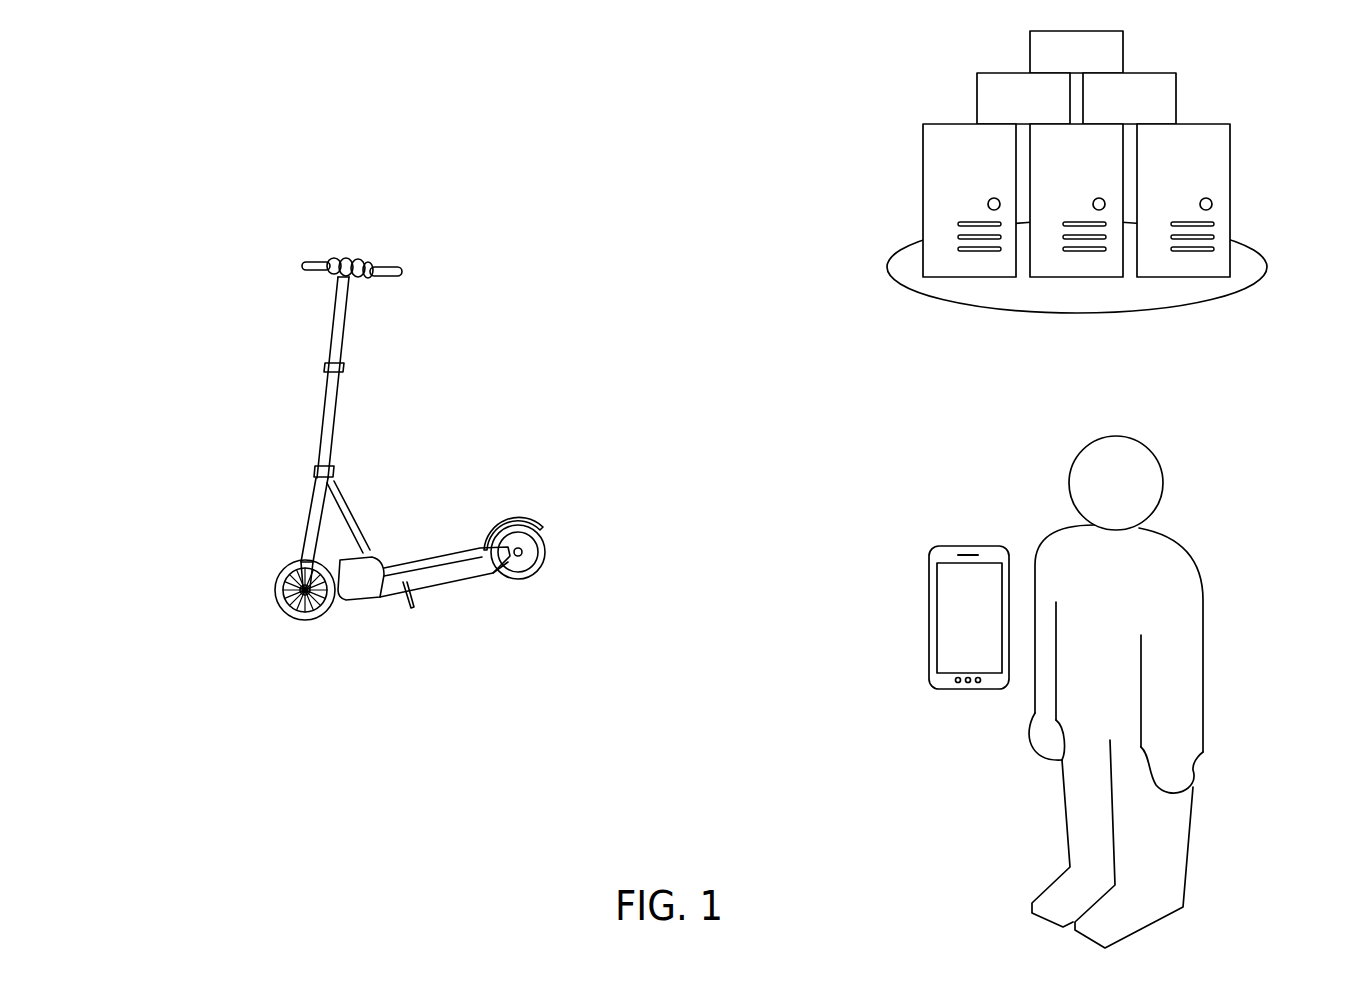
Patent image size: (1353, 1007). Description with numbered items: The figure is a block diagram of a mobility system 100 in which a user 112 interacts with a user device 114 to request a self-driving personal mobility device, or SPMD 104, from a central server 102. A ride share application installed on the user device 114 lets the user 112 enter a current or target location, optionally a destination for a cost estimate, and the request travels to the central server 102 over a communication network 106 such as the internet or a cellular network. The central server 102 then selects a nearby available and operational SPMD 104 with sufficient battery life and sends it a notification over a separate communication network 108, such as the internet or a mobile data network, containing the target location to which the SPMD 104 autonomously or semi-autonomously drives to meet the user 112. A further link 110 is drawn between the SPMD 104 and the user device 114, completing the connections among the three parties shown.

The mobility system 100 is at (208, 145).
The central server 102 is at (1230, 164).
The self-driving personal mobility device (SPMD) 104 is at (326, 392).
The communication network 106 is at (1098, 328).
The communication network 108 is at (897, 172).
The communication link between scooter and user device 110 is at (977, 758).
The user 112 is at (1203, 608).
The user device 114 is at (958, 607).